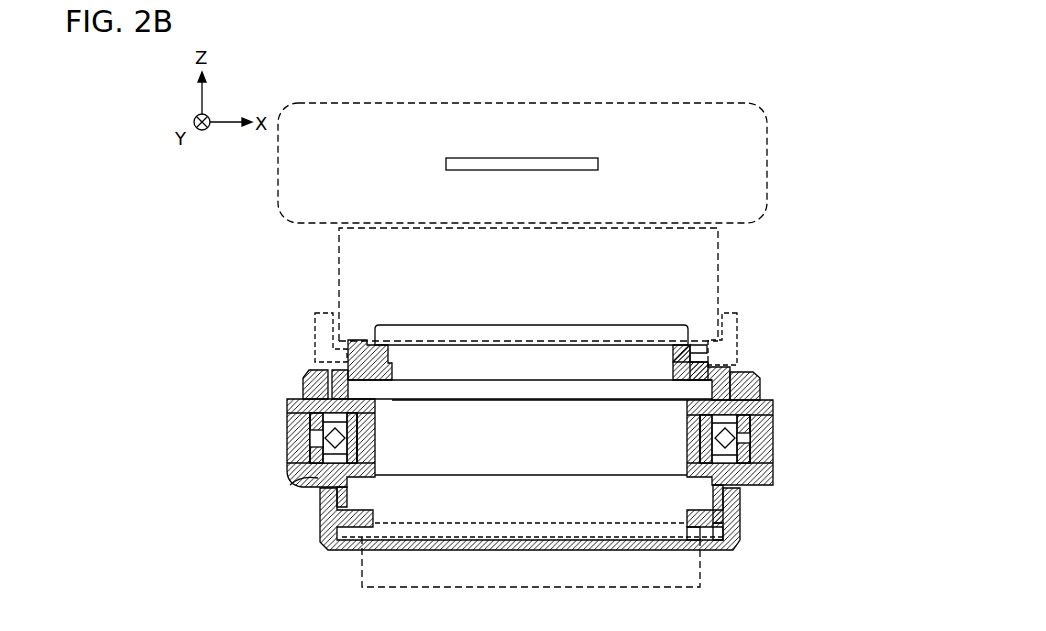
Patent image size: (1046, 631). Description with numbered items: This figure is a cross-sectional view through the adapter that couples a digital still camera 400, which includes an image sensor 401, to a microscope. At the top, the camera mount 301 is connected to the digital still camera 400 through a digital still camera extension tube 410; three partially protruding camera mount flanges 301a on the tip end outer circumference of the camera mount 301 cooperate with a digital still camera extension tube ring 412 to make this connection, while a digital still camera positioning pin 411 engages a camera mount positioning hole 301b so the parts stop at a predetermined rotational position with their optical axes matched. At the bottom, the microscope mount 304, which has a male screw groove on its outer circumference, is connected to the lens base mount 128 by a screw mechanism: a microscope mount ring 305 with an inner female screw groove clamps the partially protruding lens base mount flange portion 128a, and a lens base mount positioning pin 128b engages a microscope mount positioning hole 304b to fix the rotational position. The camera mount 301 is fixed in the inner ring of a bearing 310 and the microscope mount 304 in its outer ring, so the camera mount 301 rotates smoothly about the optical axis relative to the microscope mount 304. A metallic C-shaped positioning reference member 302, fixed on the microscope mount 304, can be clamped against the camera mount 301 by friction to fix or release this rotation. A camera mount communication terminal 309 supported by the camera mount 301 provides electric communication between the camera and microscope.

The lens base mount 128 is at (410, 575).
The lens base mount flange portion 128a is at (722, 527).
The lens base mount positioning pin 128b is at (700, 540).
The camera mount 301 is at (373, 422).
The camera mount flange 301a is at (717, 342).
The camera mount positioning hole 301b is at (688, 391).
The positioning reference member 302 is at (777, 375).
The microscope mount 304 is at (767, 439).
The microscope mount positioning hole 304b is at (712, 507).
The microscope mount ring 305 is at (740, 530).
The camera mount communication terminal 309 is at (349, 341).
The bearing 310 is at (300, 474).
The digital still camera 400 is at (294, 194).
The image sensor 401 is at (463, 158).
The digital still camera extension tube 410 is at (348, 265).
The digital still camera positioning pin 411 is at (690, 340).
The digital still camera extension tube ring 412 is at (720, 352).